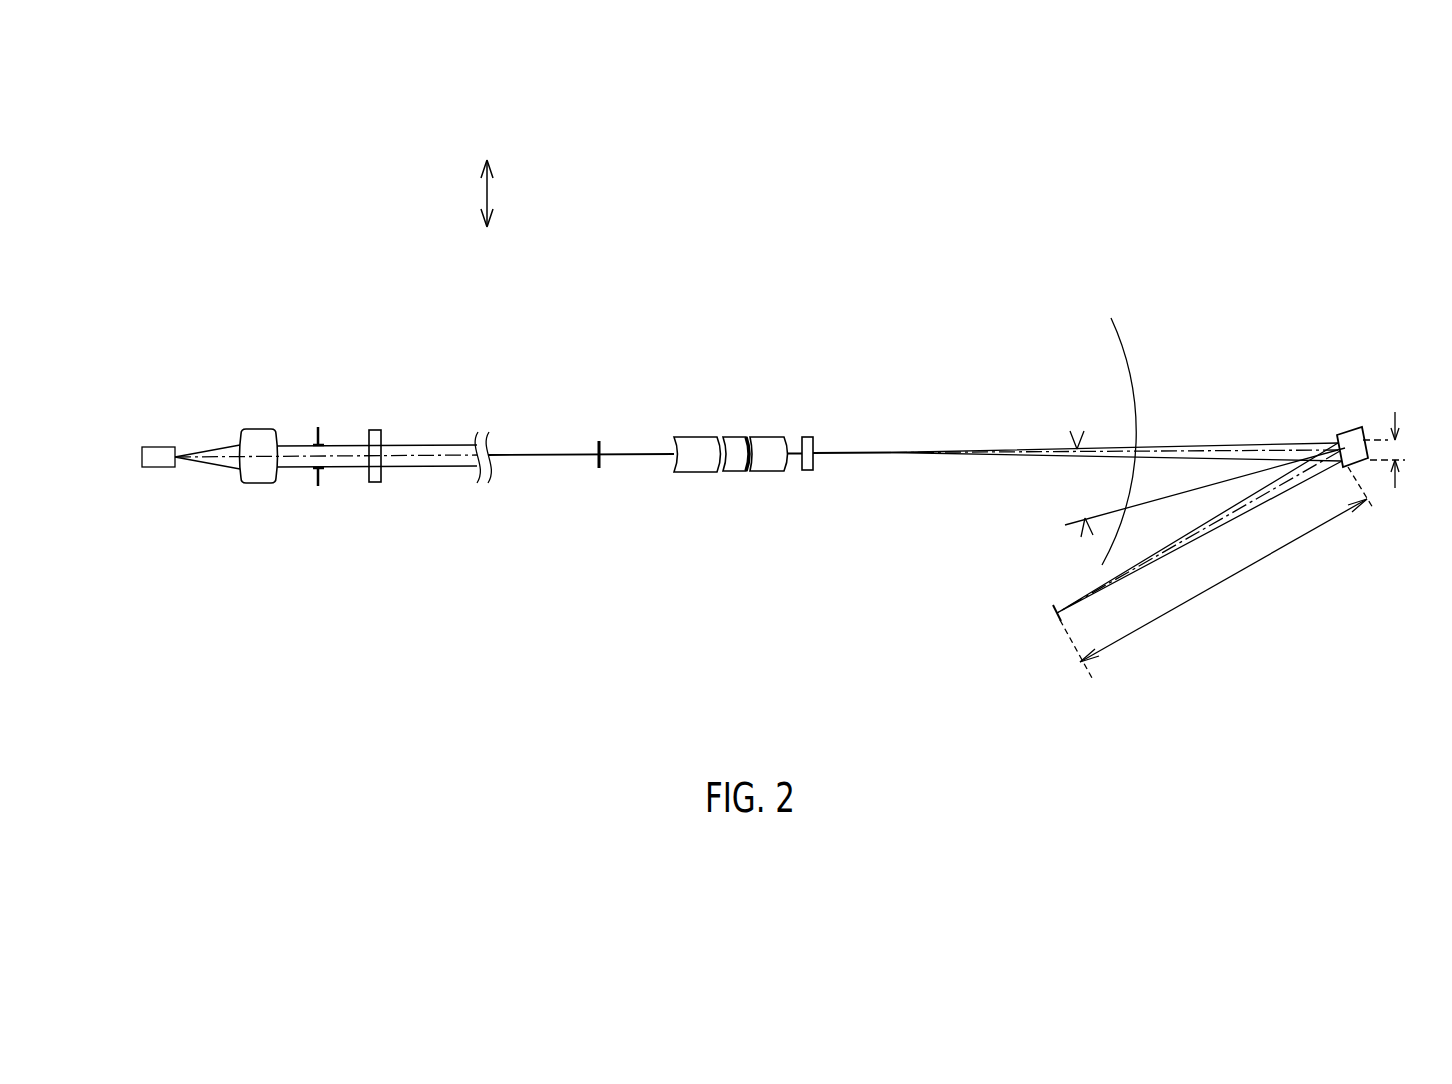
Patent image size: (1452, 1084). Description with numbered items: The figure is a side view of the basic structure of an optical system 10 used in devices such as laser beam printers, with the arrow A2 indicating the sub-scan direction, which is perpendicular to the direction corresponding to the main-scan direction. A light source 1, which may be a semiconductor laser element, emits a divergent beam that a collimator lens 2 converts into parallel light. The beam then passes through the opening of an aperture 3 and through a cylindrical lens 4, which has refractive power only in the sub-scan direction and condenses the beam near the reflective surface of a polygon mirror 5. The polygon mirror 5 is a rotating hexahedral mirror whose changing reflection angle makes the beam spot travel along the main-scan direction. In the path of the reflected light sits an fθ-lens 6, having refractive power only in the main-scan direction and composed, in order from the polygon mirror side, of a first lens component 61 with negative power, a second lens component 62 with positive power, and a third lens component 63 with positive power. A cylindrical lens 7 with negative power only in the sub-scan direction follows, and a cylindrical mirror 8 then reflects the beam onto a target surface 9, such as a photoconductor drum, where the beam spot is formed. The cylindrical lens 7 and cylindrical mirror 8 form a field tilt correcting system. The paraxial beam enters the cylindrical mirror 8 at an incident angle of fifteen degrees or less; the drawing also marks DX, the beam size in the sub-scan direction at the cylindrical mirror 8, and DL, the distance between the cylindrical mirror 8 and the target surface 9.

The light source 1 is at (160, 446).
The collimator lens 2 is at (270, 428).
The aperture 3 is at (323, 427).
The cylindrical lens 4 is at (376, 430).
The polygon mirror 5 is at (600, 433).
The fθ-lens 6 is at (797, 357).
The first lens component 61 is at (696, 436).
The second lens component 62 is at (736, 436).
The third lens component 63 is at (772, 436).
The cylindrical lens 7 is at (808, 437).
The cylindrical mirror 8 is at (1350, 428).
The target surface 9 is at (1056, 623).
The optical system 10 is at (888, 190).
The sub-scan direction A2 is at (490, 196).
The beam size in the sub-scan direction DX is at (1400, 446).
The distance between the cylindrical mirror and the target surface DL is at (1216, 572).